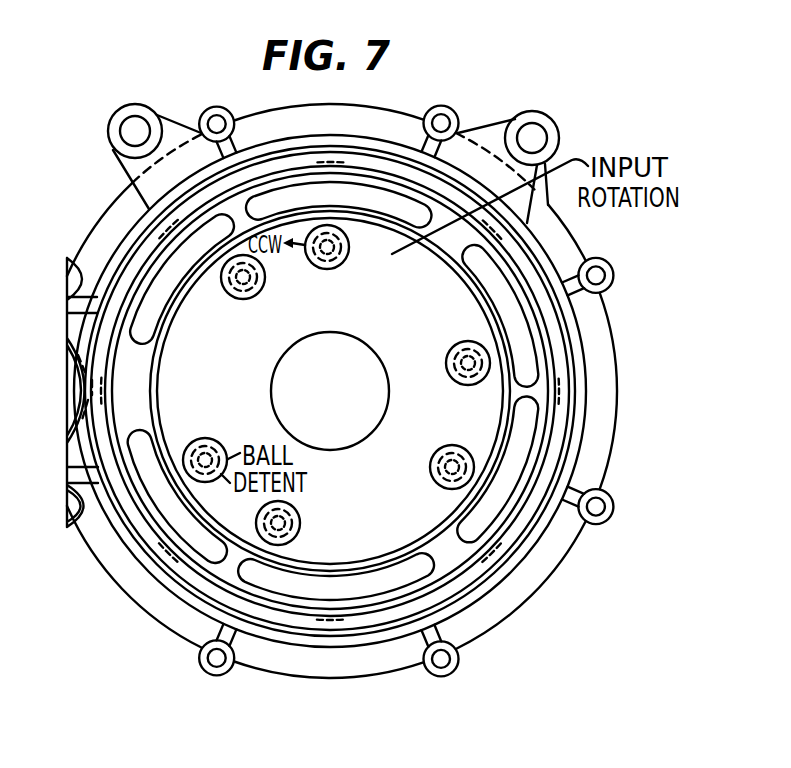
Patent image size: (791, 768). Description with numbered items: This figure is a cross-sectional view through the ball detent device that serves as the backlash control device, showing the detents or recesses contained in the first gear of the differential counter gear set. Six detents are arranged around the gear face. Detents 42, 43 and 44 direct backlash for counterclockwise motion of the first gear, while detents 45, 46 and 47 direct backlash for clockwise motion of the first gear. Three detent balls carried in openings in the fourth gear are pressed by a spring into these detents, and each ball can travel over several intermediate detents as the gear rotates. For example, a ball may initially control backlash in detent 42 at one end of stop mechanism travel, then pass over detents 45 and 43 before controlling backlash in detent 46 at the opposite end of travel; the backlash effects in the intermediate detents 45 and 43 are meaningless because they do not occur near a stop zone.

The detent 42 is at (346, 262).
The detent 43 is at (199, 438).
The detent 44 is at (434, 481).
The detent 45 is at (228, 293).
The detent 46 is at (299, 529).
The detent 47 is at (452, 347).